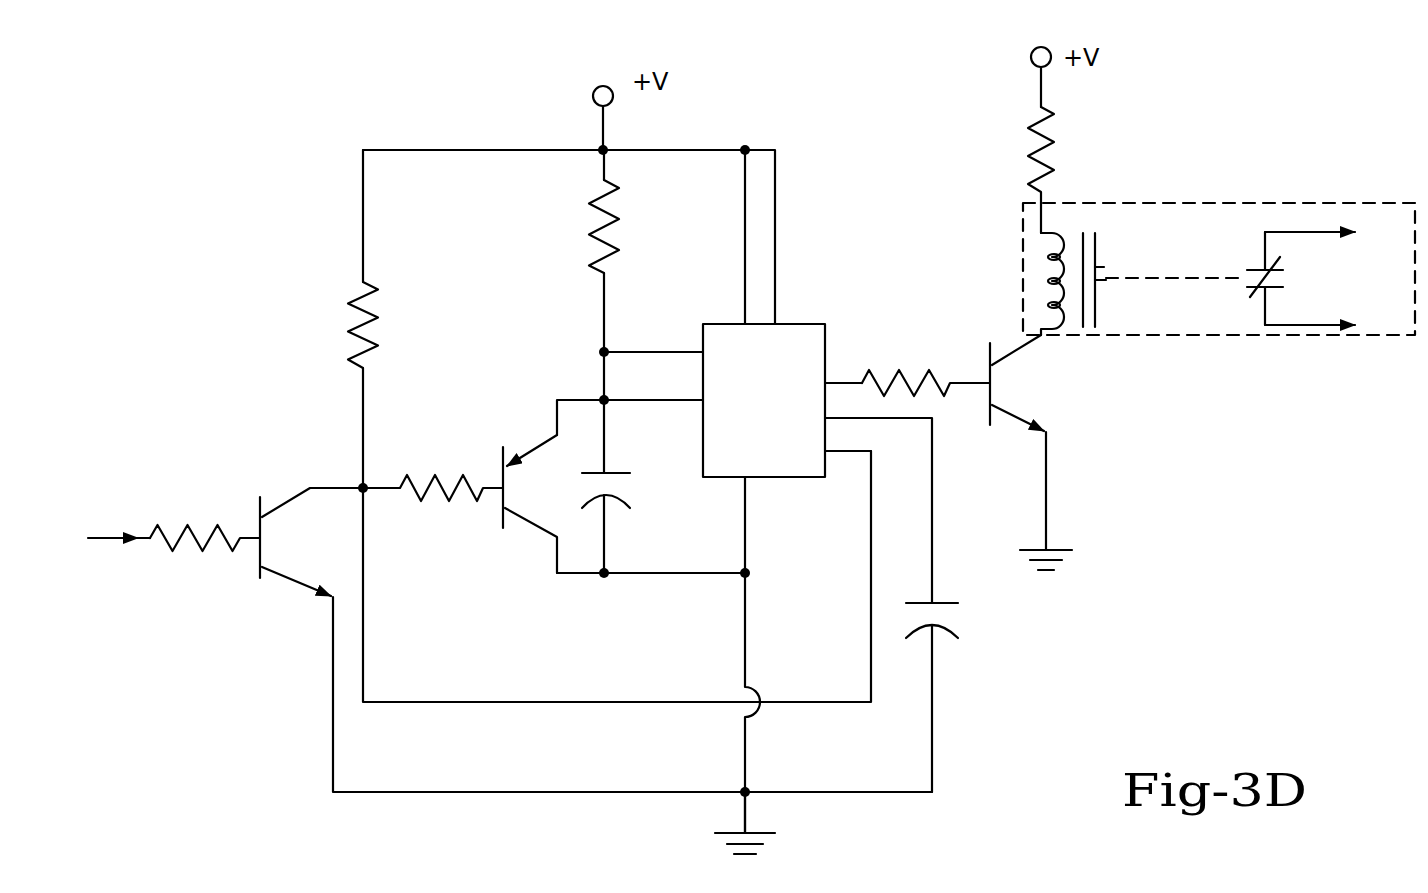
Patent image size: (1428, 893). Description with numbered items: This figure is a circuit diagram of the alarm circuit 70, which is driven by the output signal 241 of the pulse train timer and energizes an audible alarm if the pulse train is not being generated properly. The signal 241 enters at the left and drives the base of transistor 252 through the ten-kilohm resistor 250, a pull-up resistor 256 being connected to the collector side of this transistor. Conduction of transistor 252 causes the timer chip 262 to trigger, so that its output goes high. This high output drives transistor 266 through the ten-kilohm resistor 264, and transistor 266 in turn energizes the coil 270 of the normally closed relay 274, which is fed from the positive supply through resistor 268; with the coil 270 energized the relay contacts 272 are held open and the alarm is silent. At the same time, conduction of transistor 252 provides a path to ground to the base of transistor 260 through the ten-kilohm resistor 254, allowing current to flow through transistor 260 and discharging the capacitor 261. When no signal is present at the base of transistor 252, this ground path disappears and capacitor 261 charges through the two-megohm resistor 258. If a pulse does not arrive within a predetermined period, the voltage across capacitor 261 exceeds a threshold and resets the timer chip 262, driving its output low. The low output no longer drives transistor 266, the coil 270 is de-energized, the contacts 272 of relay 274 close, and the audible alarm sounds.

The alarm circuit 70 is at (266, 735).
The output signal 241 is at (111, 520).
The 10KΩ resistor 250 is at (171, 524).
The transistor 252 is at (257, 520).
The 10KΩ resistor 254 is at (417, 487).
The pull-up resistor 256 is at (352, 348).
The 2MΩ resistor 258 is at (602, 247).
The transistor 260 is at (500, 521).
The capacitor 261 is at (618, 498).
The timer chip 262 is at (803, 323).
The 10KΩ resistor 264 is at (937, 373).
The transistor 266 is at (1017, 351).
The supply resistor 268 is at (1037, 130).
The coil 270 is at (1097, 265).
The contacts 272 is at (1263, 260).
The normally closed relay 274 is at (1191, 157).